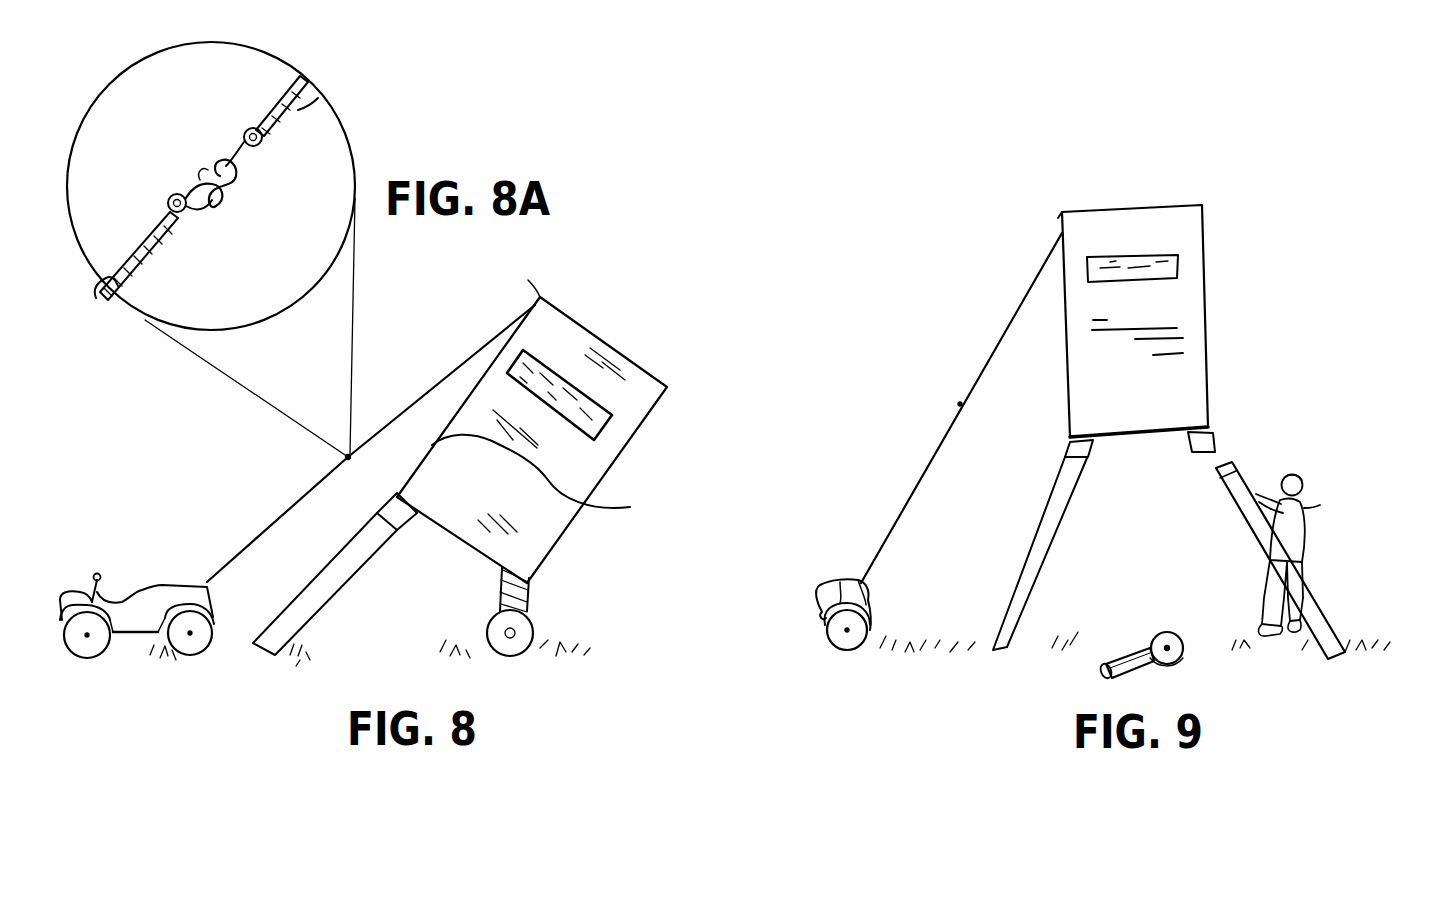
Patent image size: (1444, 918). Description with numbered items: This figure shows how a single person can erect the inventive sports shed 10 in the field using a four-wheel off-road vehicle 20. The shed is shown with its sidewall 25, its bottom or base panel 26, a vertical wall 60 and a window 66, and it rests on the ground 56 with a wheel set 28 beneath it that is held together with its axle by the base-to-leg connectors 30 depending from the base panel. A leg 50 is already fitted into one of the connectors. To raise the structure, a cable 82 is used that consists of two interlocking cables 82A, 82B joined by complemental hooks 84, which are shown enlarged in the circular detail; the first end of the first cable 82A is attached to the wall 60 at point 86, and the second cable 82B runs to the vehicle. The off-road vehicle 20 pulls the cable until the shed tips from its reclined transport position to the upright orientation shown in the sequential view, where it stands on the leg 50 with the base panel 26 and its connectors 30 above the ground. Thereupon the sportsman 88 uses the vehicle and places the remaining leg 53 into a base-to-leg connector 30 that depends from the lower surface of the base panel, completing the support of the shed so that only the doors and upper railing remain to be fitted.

In FIG. 8, the sports shed 10 is at (534, 548).
In FIG. 9, the sports shed 10 is at (1160, 397).
In FIG. 8, the four-wheel off-road vehicle 20 is at (185, 553).
In FIG. 9, the four-wheel off-road vehicle 20 is at (863, 593).
In FIG. 8, the sidewall 25 is at (642, 436).
In FIG. 9, the bottom or base panel 26 is at (1143, 440).
In FIG. 8, the wheel set 28 is at (533, 645).
In FIG. 9, the wheel set 28 is at (1110, 647).
In FIG. 9, the base-to-leg connector 30 is at (1215, 443).
In FIG. 8, the leg 50 is at (332, 572).
In FIG. 9, the leg 50 is at (1042, 557).
In FIG. 9, the leg 53 is at (1320, 608).
In FIG. 8, the ground 56 is at (250, 746).
In FIG. 9, the ground 56 is at (1355, 766).
In FIG. 8, the vertical wall 60 is at (553, 496).
In FIG. 9, the window 66 is at (1155, 265).
In FIG. 9, the cable 82 is at (1007, 323).
In FIG. 8A, the first interlocking cable 82A is at (300, 108).
In FIG. 8, the first interlocking cable 82A is at (407, 405).
In FIG. 8A, the second interlocking cable 82B is at (100, 272).
In FIG. 8, the second interlocking cable 82B is at (284, 512).
In FIG. 8A, the complemental hooks 84 is at (222, 190).
In FIG. 8, the attachment point 86 is at (527, 313).
In FIG. 9, the attachment point 86 is at (1060, 218).
In FIG. 9, the sportsman 88 is at (1307, 512).